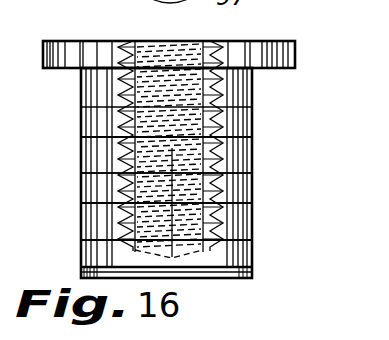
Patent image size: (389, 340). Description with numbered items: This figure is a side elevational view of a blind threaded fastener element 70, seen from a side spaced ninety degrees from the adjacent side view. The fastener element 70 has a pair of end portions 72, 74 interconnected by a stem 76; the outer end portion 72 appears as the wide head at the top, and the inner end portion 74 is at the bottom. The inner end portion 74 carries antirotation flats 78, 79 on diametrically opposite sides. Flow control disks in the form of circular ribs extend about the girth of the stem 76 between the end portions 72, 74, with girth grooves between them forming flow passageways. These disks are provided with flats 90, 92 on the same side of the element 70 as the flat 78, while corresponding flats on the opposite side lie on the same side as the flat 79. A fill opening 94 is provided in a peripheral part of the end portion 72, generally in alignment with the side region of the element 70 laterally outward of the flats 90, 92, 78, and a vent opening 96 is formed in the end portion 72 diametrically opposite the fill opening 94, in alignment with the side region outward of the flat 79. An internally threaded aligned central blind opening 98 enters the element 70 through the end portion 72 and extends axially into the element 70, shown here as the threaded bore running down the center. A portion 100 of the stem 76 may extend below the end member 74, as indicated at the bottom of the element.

The fastener element 70 is at (262, 270).
The end portion 72 is at (61, 41).
The inner end portion 74 is at (81, 267).
The stem 76 is at (255, 163).
The antirotation flat 78 is at (100, 258).
The antirotation flat 79 is at (255, 252).
The flat 90 is at (81, 120).
The flat 92 is at (81, 190).
The fill opening 94 is at (255, 122).
The vent opening 96 is at (253, 190).
The central blind opening 98 is at (176, 44).
The portion of the stem 100 is at (220, 278).